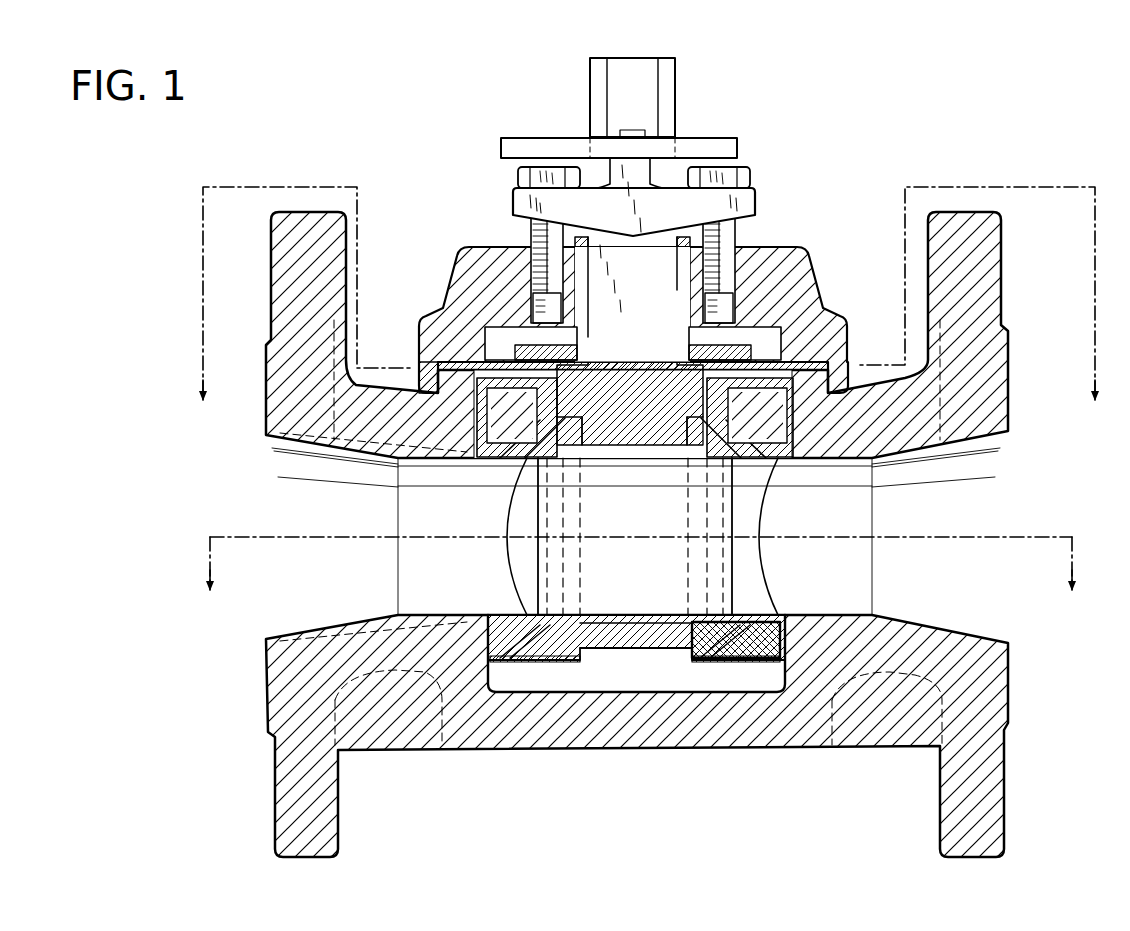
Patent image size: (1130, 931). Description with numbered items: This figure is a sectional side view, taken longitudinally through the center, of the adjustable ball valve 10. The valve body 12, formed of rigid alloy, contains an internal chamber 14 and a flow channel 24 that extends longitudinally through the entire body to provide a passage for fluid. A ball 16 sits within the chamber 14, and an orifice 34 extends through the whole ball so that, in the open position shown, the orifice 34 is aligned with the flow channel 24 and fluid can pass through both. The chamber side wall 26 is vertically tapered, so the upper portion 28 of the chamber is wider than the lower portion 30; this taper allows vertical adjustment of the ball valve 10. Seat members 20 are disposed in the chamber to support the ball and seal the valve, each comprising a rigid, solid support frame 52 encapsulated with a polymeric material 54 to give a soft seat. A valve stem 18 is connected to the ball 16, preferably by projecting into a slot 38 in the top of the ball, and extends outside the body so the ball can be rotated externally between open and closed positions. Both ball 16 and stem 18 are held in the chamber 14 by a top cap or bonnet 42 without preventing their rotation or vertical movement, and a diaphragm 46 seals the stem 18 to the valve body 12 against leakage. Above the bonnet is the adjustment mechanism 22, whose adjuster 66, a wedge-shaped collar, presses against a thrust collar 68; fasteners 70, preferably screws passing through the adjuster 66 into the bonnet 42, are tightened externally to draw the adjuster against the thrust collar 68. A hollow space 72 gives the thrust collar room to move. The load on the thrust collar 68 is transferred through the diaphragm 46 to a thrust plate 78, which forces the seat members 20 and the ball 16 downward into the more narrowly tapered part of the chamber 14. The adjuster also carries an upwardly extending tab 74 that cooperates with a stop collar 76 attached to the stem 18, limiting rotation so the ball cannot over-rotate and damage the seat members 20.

The adjustable ball valve 10 is at (340, 130).
The valve body 12 is at (290, 290).
The internal chamber 14 is at (595, 677).
The ball 16 is at (643, 650).
The valve stem 18 is at (633, 347).
The seat members 20 is at (512, 610).
The adjustment mechanism 22 is at (510, 232).
The flow channel 24 is at (636, 531).
The chamber side wall 26 is at (813, 443).
The upper portion of the chamber 28 is at (798, 380).
The lower portion of the chamber 30 is at (787, 668).
The orifice 34 is at (635, 536).
The slot 38 is at (675, 80).
The bonnet 42 is at (820, 292).
The diaphragm 46 is at (432, 362).
The support frame 52 is at (752, 640).
The polymeric material 54 is at (700, 655).
The adjuster 66 is at (757, 200).
The thrust collar 68 is at (590, 268).
The fasteners 70 is at (518, 180).
The hollow space 72 is at (500, 340).
The tab 74 is at (625, 145).
The stop collar 76 is at (737, 146).
The thrust plate 78 is at (772, 372).